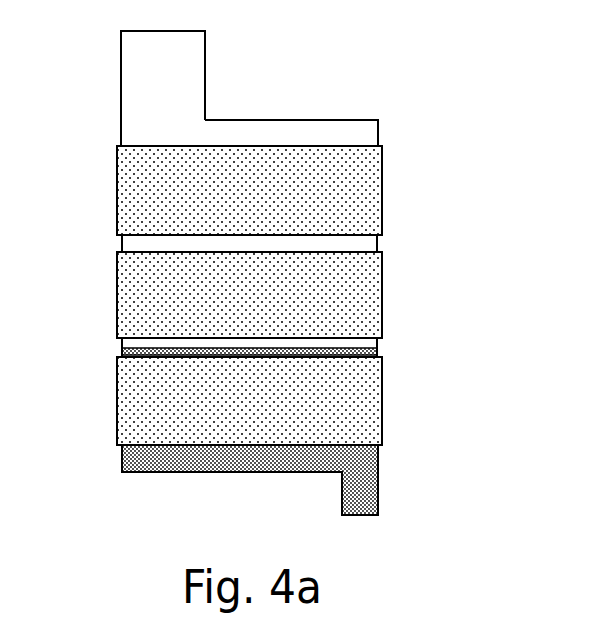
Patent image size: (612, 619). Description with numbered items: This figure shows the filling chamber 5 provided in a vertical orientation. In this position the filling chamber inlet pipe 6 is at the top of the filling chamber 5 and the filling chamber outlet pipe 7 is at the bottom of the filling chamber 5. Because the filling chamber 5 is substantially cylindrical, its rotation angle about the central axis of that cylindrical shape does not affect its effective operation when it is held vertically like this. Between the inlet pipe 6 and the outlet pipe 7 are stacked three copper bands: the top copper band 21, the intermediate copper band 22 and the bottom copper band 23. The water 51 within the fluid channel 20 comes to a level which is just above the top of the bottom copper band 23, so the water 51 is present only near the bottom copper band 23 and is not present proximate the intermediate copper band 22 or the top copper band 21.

The filling chamber 5 is at (460, 106).
The filling chamber inlet pipe 6 is at (120, 75).
The fluid channel 20 is at (320, 135).
The top copper band 21 is at (117, 170).
The intermediate copper band 22 is at (117, 298).
The bottom copper band 23 is at (117, 405).
The water 51 is at (375, 352).
The filling chamber outlet pipe 7 is at (378, 483).